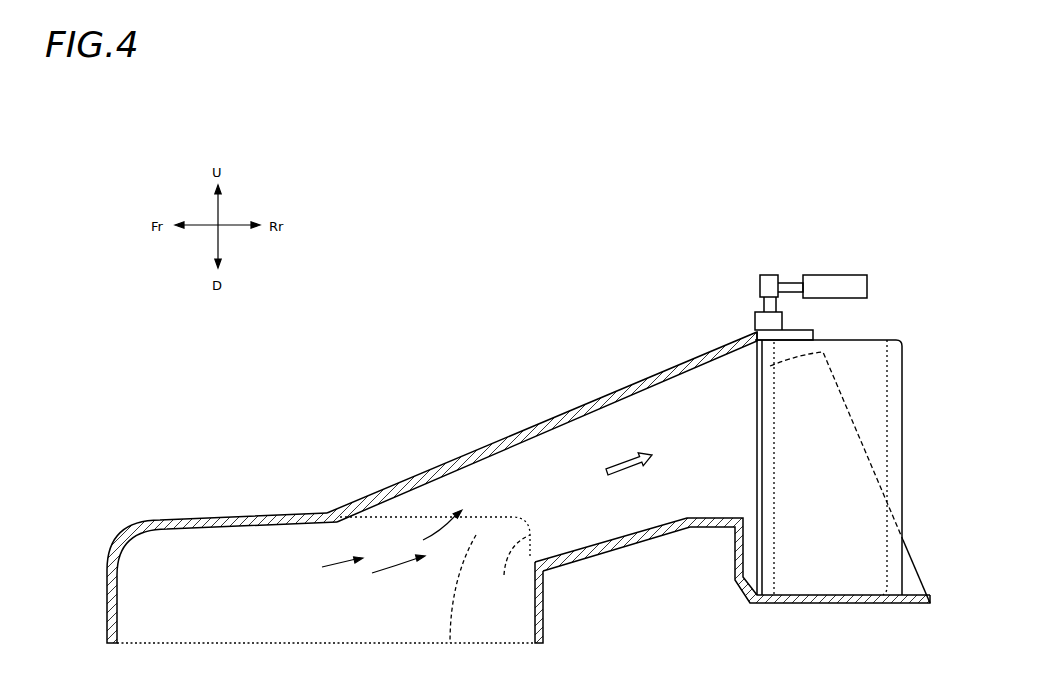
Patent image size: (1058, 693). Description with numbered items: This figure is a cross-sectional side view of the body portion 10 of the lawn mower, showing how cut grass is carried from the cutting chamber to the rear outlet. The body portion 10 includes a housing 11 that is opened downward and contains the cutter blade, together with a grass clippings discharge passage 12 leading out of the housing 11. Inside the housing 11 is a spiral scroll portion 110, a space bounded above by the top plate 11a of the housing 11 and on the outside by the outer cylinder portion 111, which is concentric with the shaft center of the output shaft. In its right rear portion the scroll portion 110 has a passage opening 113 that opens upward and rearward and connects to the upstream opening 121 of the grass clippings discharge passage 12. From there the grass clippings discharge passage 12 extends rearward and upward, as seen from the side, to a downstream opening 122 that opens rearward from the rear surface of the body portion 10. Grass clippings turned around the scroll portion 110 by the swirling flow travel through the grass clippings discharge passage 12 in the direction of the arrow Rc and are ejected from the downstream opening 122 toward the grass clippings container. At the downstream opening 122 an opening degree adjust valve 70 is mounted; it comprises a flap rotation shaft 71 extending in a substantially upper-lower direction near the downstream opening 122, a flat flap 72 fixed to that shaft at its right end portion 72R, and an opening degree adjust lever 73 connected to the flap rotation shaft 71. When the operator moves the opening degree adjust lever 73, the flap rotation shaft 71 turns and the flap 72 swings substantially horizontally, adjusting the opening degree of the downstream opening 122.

The body portion 10 is at (137, 535).
The housing 11 is at (252, 625).
The top plate 11a is at (210, 520).
The grass clippings discharge passage 12 is at (658, 397).
The scroll portion 110 is at (318, 623).
The outer cylinder portion 111 is at (108, 612).
The passage opening 113 is at (504, 575).
The upstream opening 121 is at (450, 643).
The downstream opening 122 is at (913, 566).
The opening degree adjust valve 70 is at (886, 276).
The flap rotation shaft 71 is at (835, 346).
The flap 72 is at (870, 375).
The right end portion 72R is at (757, 430).
The opening degree adjust lever 73 is at (833, 276).
The arrow Rc is at (629, 454).